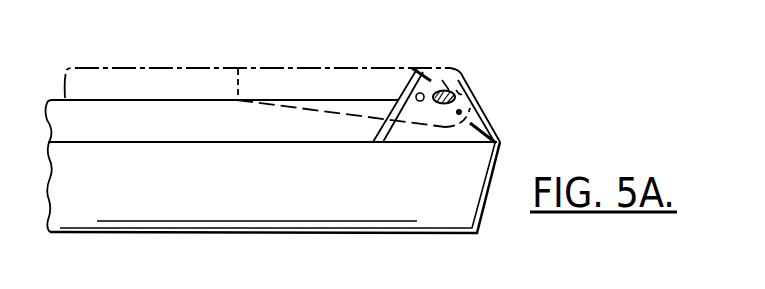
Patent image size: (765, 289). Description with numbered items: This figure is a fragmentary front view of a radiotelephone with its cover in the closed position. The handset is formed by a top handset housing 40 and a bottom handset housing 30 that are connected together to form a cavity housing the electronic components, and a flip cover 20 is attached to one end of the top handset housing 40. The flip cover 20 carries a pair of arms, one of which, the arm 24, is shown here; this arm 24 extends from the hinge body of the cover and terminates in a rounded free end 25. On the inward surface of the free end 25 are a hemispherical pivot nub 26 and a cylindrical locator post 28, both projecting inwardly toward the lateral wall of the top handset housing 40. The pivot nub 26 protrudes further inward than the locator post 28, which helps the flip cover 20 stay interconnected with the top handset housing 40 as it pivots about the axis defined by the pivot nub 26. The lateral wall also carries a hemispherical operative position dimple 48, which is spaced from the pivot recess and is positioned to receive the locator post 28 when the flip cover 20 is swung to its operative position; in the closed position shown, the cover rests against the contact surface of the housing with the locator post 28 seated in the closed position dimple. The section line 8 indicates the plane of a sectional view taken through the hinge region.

The section line 8- 8 is at (371, 62).
The flip cover 20 is at (255, 62).
The arm 24 is at (442, 80).
The rounded free end 25 is at (462, 94).
The hemispherical pivot nub 26 is at (456, 89).
The cylindrical locator post 28 is at (466, 113).
The bottom handset housing 30 is at (294, 240).
The top handset housing 40 is at (48, 124).
The operative position dimple 48 is at (420, 101).